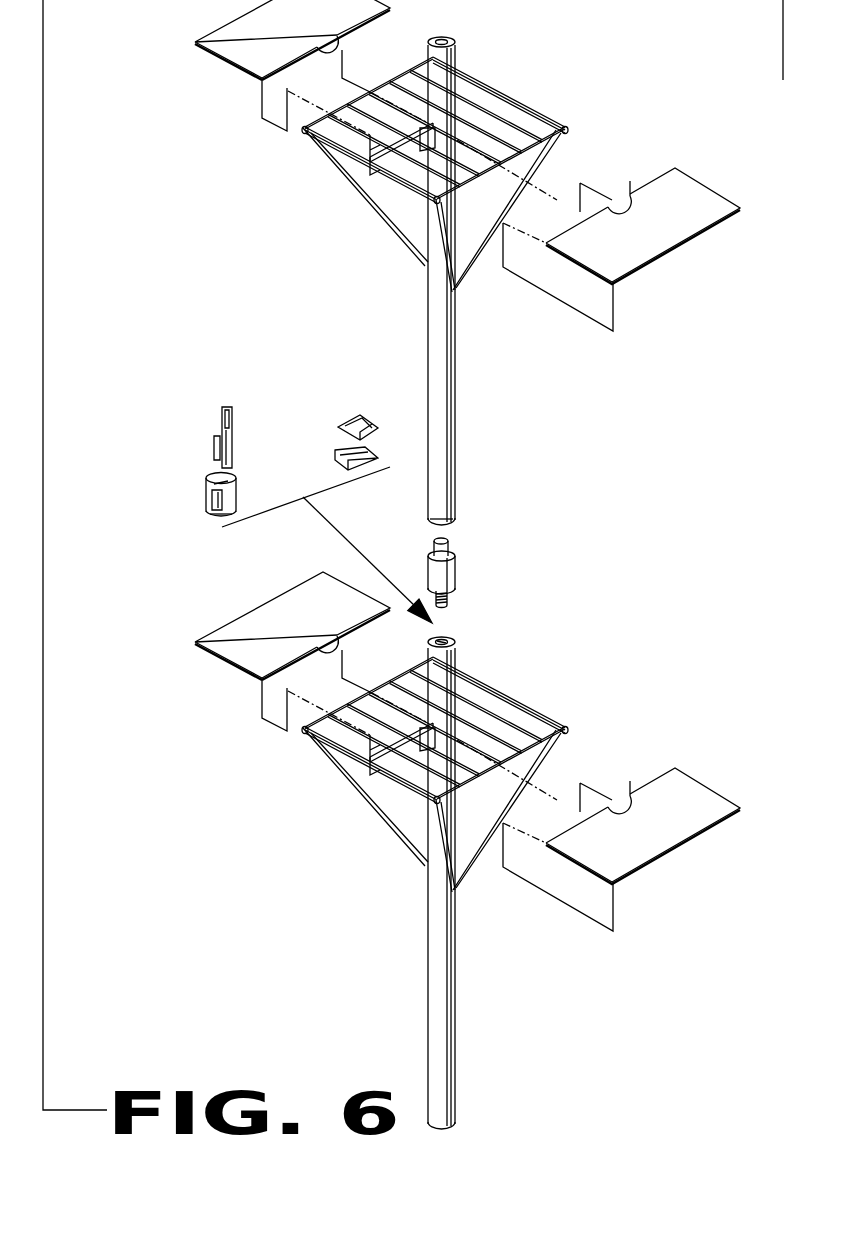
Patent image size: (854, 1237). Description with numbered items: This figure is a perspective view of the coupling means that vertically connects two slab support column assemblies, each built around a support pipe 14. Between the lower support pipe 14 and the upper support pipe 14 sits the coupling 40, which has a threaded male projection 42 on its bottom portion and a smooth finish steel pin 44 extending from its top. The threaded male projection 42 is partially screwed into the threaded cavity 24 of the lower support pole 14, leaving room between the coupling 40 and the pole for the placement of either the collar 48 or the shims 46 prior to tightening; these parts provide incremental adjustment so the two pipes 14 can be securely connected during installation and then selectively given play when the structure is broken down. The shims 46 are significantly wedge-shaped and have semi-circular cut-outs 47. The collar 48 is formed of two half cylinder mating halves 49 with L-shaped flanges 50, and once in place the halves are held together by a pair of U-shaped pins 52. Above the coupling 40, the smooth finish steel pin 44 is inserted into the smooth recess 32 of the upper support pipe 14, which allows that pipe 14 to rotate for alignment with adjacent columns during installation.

The support pipe 14 is at (455, 362).
The threaded cavity 24 is at (448, 642).
The smooth recess 32 is at (456, 516).
The coupling 40 is at (446, 563).
The threaded male projection 42 is at (450, 594).
The smooth finish steel pin 44 is at (434, 548).
The shims 46 is at (350, 440).
The semi-circular cut-outs 47 is at (374, 440).
The collar 48 is at (207, 490).
The half cylinder mating halves 49 is at (232, 512).
The L-shaped flanges 50 is at (232, 490).
The U-shaped pins 52 is at (222, 418).